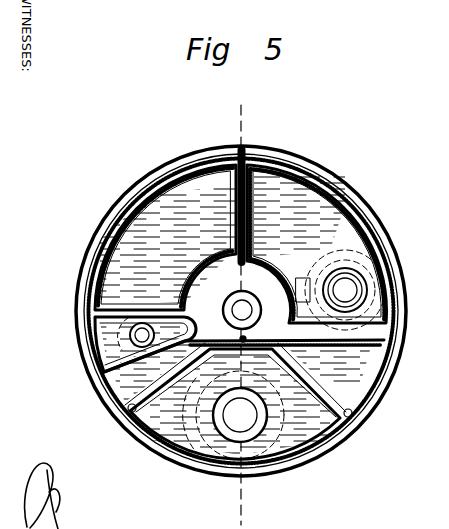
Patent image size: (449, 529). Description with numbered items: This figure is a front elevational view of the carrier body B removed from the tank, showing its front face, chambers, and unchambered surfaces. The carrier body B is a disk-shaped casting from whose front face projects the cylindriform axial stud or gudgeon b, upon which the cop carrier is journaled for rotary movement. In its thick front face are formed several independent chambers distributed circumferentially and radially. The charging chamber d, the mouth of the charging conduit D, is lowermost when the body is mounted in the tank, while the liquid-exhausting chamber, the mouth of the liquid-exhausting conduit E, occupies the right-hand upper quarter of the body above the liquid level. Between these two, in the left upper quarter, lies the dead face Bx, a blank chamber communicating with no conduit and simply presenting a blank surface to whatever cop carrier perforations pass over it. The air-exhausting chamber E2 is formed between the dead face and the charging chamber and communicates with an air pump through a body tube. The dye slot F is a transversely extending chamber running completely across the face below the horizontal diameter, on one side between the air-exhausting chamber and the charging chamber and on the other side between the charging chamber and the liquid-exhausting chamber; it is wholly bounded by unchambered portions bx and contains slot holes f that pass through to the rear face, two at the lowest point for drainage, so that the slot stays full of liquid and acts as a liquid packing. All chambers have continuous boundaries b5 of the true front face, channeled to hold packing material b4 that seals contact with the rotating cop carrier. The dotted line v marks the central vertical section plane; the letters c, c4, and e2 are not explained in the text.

The carrier body B is at (255, 311).
The packing material b4 is at (140, 189).
The chamber boundaries b5 is at (119, 204).
The dead face Bx is at (165, 237).
The upper right compartment c is at (317, 244).
The partition wall of right compartment c4 is at (297, 376).
The liquid-exhausting conduit E is at (345, 290).
The axial stud or gudgeon b is at (229, 299).
The unchambered portions bx is at (232, 311).
The air-exhausting chamber E2 is at (120, 369).
The bearing boss in lower left compartment e2 is at (136, 334).
The dye slot F is at (244, 376).
The slot holes f is at (247, 338).
The charging chamber d is at (235, 404).
The charging conduit D is at (233, 415).
The section line v- v is at (188, 111).